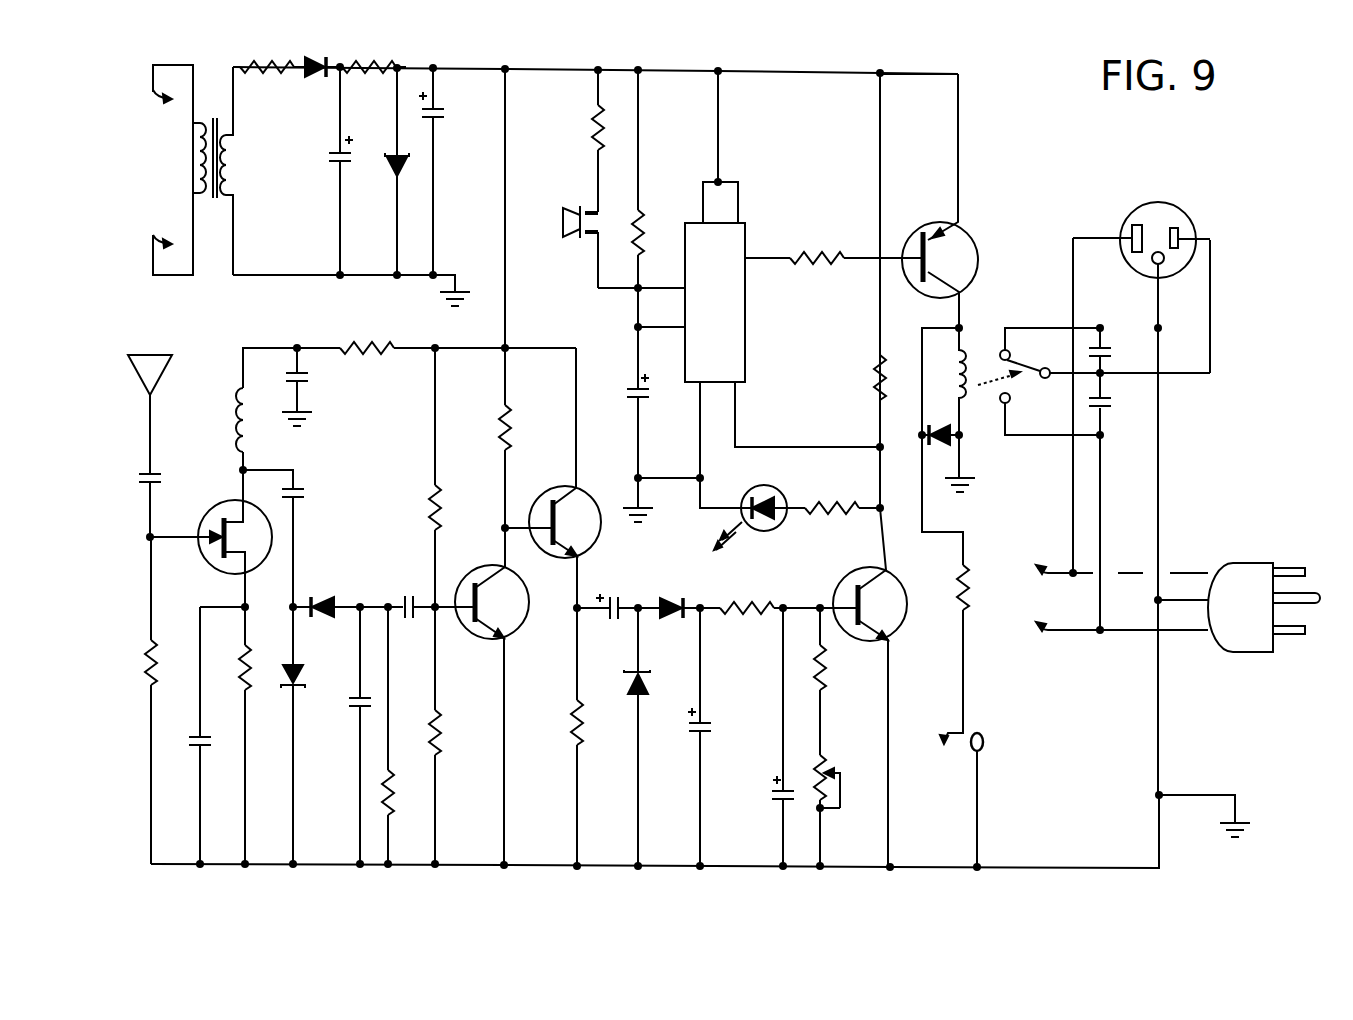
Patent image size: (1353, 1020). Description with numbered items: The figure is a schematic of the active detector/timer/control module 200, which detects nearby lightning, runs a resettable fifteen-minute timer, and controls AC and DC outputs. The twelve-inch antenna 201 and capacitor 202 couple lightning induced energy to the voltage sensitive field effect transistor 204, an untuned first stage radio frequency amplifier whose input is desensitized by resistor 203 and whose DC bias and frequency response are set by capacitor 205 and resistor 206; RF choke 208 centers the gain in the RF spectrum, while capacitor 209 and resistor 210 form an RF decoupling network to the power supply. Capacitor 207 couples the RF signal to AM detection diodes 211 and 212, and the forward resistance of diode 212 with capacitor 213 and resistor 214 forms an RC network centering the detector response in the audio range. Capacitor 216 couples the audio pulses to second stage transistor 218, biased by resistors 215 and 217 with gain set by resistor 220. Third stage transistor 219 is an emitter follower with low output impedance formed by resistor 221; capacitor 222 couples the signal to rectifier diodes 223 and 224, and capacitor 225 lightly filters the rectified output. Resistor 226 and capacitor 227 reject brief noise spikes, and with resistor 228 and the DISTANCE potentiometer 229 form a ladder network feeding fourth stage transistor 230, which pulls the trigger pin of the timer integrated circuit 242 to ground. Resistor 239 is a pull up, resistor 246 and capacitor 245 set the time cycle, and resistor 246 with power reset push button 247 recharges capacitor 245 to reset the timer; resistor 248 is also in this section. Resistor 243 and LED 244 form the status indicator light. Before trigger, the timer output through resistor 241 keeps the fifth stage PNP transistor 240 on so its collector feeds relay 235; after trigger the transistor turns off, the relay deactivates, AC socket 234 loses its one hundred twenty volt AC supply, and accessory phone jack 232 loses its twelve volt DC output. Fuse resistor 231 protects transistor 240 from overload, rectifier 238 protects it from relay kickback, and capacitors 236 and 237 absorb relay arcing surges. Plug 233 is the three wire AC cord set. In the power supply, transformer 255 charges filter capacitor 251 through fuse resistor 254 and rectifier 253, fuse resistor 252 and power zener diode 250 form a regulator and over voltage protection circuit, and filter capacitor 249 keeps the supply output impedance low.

The detector/timer/control module 200 is at (1236, 454).
The antenna 201 is at (158, 354).
The ceramic capacitor 202 is at (156, 478).
The film resistor 203 is at (151, 644).
The field effect transistor 204 is at (204, 564).
The ceramic capacitor 205 is at (194, 734).
The film resistor 206 is at (242, 676).
The ceramic capacitor 207 is at (300, 492).
The RF choke 208 is at (244, 427).
The ceramic capacitor 209 is at (306, 370).
The film resistor 210 is at (364, 362).
The silicon signal diode 211 is at (304, 671).
The silicon signal diode 212 is at (320, 616).
The ceramic capacitor 213 is at (352, 712).
The film resistor 214 is at (394, 782).
The film resistor 215 is at (434, 736).
The ceramic capacitor 216 is at (406, 598).
The film resistor 217 is at (430, 506).
The silicon transistor 218 is at (498, 640).
The silicon transistor 219 is at (565, 560).
The film resistor 220 is at (504, 422).
The film resistor 221 is at (574, 706).
The electrolytic capacitor 222 is at (603, 596).
The silicon signal diode 223 is at (626, 668).
The silicon signal diode 224 is at (660, 595).
The electrolytic capacitor 225 is at (695, 735).
The film resistor 226 is at (760, 602).
The electrolytic capacitor 227 is at (778, 805).
The film resistor 228 is at (822, 692).
The linear taper potentiometer 229 is at (843, 808).
The silicon transistor 230 is at (872, 644).
The metal oxide resistor 231 is at (958, 568).
The phone jack 232 is at (970, 748).
The line cord 233 is at (1222, 653).
The AC socket 234 is at (1122, 222).
The relay 235 is at (964, 335).
The ceramic capacitor 236 is at (1110, 341).
The ceramic capacitor 237 is at (1109, 400).
The silicon power diode 238 is at (963, 450).
The film resistor 239 is at (878, 377).
The silicon transistor 240 is at (931, 294).
The film resistor 241 is at (836, 264).
The timer integrated circuit 242 is at (745, 322).
The film resistor 243 is at (860, 504).
The light emitting diode 244 is at (743, 498).
The electrolytic capacitor 245 is at (642, 400).
The film resistor 246 is at (634, 218).
The momentary push button 247 is at (584, 242).
The film resistor 248 is at (596, 110).
The electrolytic capacitor 249 is at (438, 114).
The zener diode 250 is at (406, 168).
The electrolytic capacitor 251 is at (336, 170).
The metal oxide resistor 252 is at (374, 86).
The silicon power diode 253 is at (320, 80).
The metal oxide resistor 254 is at (269, 84).
The power transformer 255 is at (238, 200).